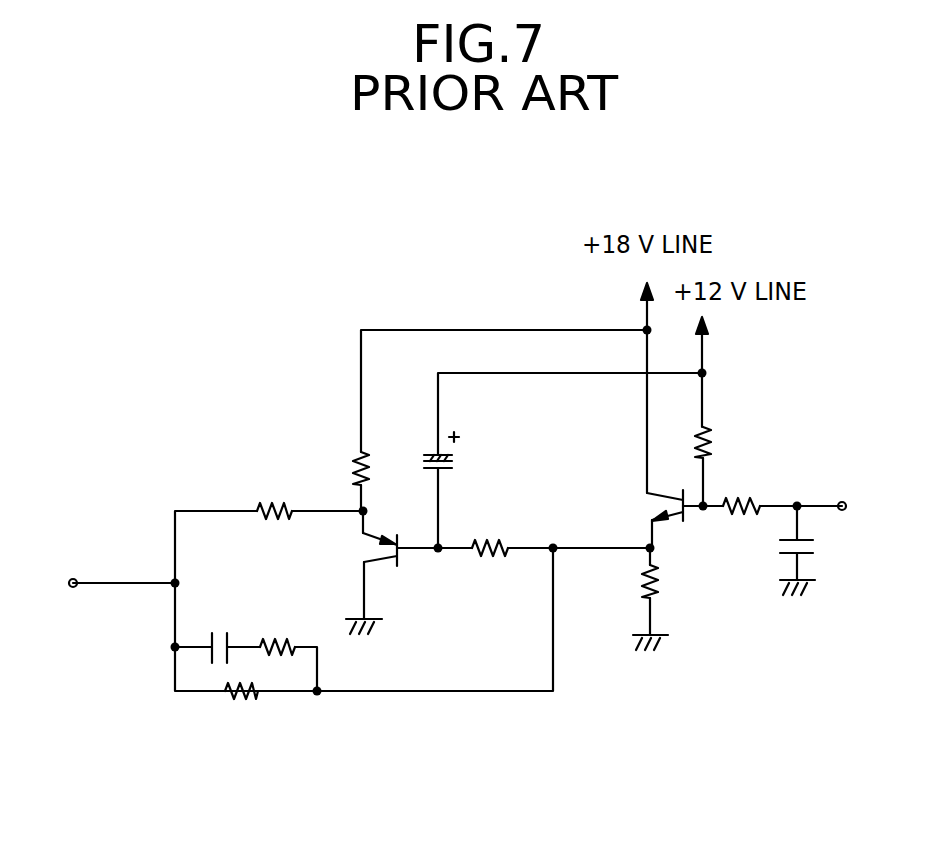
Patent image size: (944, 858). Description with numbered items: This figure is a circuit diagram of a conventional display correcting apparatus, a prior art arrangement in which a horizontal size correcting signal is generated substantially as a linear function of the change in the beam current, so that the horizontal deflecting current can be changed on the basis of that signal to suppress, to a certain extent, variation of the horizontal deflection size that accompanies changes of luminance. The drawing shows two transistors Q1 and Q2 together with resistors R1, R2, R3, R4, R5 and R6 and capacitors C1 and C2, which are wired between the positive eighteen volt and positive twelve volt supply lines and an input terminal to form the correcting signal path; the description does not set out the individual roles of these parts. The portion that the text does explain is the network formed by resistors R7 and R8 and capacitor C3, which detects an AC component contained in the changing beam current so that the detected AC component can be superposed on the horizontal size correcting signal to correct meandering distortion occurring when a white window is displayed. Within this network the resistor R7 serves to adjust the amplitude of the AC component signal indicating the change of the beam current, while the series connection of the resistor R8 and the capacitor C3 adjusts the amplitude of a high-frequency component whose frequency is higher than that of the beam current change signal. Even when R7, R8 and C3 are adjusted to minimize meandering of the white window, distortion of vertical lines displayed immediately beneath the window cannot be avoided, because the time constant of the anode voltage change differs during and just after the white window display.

The transistor Q1 is at (638, 507).
The transistor Q2 is at (345, 572).
The resistor R1 is at (715, 441).
The resistor R2 is at (757, 495).
The resistor R3 is at (665, 590).
The resistor R4 is at (483, 560).
The resistor R5 is at (350, 459).
The resistor R6 is at (261, 500).
The resistor R7 is at (281, 640).
The resistor R8 is at (238, 703).
The capacitor C1 is at (815, 550).
The electrolytic capacitor C2 is at (469, 456).
The capacitor C3 is at (220, 624).